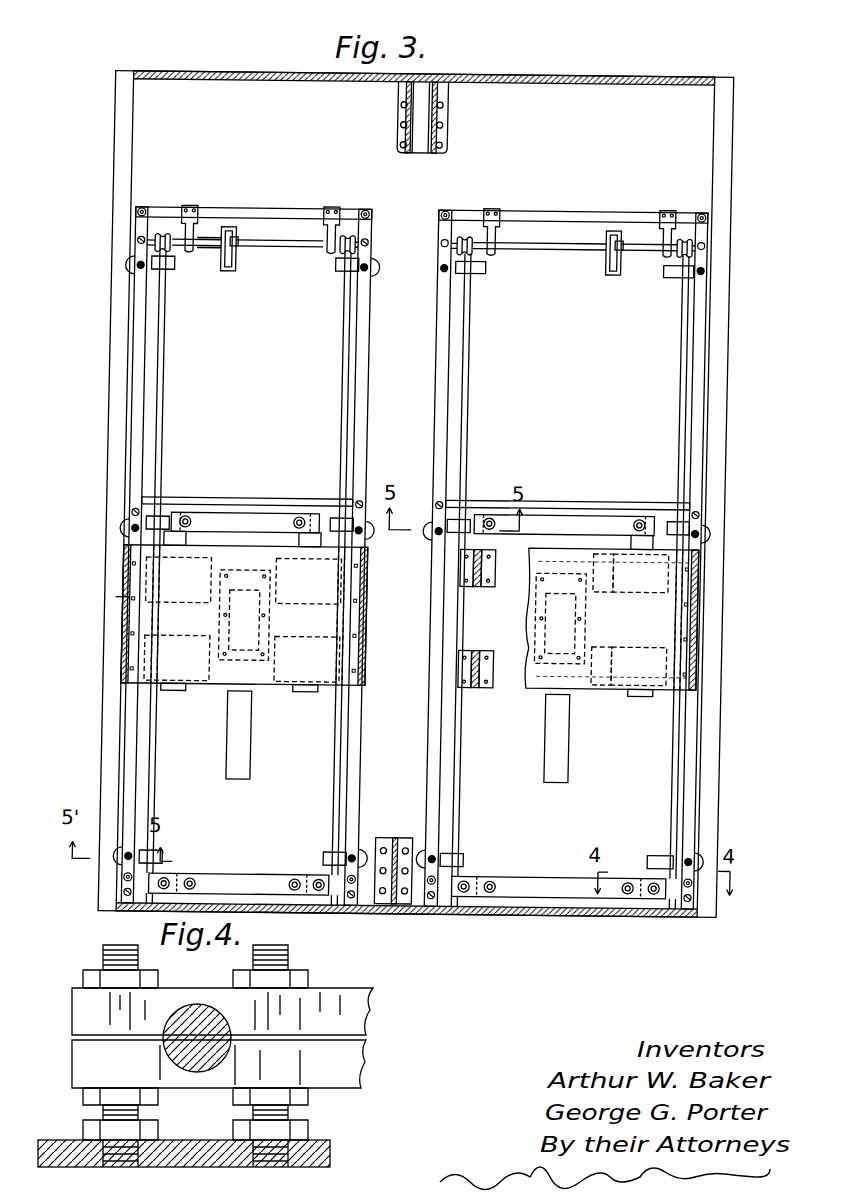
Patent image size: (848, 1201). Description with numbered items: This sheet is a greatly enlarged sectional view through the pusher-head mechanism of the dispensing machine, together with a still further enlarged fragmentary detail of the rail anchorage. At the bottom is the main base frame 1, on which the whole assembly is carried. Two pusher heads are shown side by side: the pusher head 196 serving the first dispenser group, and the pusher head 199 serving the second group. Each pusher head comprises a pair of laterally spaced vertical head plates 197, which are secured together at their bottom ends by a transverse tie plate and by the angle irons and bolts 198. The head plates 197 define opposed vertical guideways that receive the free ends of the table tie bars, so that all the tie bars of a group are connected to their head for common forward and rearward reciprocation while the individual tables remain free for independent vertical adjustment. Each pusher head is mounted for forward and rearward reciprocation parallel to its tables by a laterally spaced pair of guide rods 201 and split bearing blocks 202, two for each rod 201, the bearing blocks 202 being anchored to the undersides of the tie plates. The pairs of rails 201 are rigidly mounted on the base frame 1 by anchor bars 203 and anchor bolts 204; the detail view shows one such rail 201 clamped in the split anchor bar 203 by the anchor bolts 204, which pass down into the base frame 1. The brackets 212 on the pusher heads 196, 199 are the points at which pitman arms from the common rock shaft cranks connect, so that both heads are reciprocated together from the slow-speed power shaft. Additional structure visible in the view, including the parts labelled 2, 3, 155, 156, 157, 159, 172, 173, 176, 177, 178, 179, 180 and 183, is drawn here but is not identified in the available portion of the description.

In FIG. 3, the base frame 1 is at (717, 757).
In FIG. 4, the base frame 1 is at (331, 1163).
In FIG. 3, the bottom frame member 2 is at (703, 918).
In FIG. 3, the top frame member 3 is at (650, 76).
In FIG. 3, the right unit frame 155 is at (702, 442).
In FIG. 3, the left unit frame 156 is at (360, 428).
In FIG. 3, the screw 157 is at (133, 243).
In FIG. 3, the nut 159 is at (150, 270).
In FIG. 3, the clamp block 172 is at (147, 265).
In FIG. 3, the washer 173 is at (124, 275).
In FIG. 3, the center bearing 176 is at (226, 230).
In FIG. 3, the pin 177 is at (233, 250).
In FIG. 3, the shaft 178 is at (268, 240).
In FIG. 3, the bracket 179 is at (184, 208).
In FIG. 3, the spring 180 is at (160, 238).
In FIG. 3, the plate 183 is at (481, 268).
In FIG. 3, the pusher head 196 is at (665, 632).
In FIG. 3, the head plates 197 is at (125, 655).
In FIG. 3, the angle irons and bolts 198 is at (125, 600).
In FIG. 3, the pusher head 199 is at (113, 633).
In FIG. 3, the guide rods 201 is at (160, 765).
In FIG. 4, the guide rods 201 is at (210, 1022).
In FIG. 3, the split bearing blocks 202 is at (200, 570).
In FIG. 3, the anchor bars 203 is at (262, 530).
In FIG. 4, the anchor bars 203 is at (345, 1032).
In FIG. 3, the anchor bolts 204 is at (187, 518).
In FIG. 4, the anchor bolts 204 is at (140, 1115).
In FIG. 3, the bracket 212 is at (222, 604).